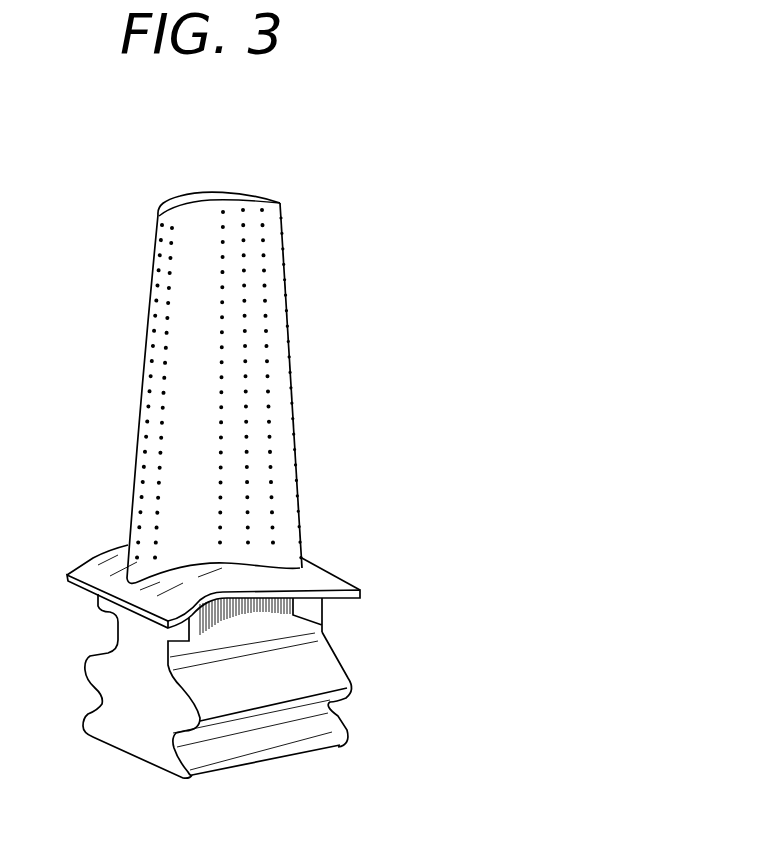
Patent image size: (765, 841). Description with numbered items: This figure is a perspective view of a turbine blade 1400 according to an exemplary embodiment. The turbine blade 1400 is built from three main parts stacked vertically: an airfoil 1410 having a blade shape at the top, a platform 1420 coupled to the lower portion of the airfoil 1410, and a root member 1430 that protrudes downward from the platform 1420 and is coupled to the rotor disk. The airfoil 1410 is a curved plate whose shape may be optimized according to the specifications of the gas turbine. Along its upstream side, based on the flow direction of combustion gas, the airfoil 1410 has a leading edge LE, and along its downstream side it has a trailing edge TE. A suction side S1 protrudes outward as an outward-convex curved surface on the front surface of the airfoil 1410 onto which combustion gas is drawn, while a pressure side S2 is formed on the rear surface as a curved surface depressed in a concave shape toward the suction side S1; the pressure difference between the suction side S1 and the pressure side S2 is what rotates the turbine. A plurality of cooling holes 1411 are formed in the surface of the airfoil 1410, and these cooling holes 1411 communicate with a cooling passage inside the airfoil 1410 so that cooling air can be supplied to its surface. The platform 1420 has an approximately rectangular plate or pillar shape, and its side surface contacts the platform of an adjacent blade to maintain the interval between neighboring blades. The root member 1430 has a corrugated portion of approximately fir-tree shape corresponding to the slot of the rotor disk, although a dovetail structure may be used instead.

The turbine blade 1400 is at (157, 165).
The airfoil 1410 is at (184, 487).
The cooling holes 1411 is at (167, 298).
The platform 1420 is at (333, 573).
The root member 1430 is at (325, 670).
The suction side S1 is at (250, 193).
The pressure side S2 is at (184, 350).
The leading edge LE is at (137, 430).
The trailing edge TE is at (293, 437).